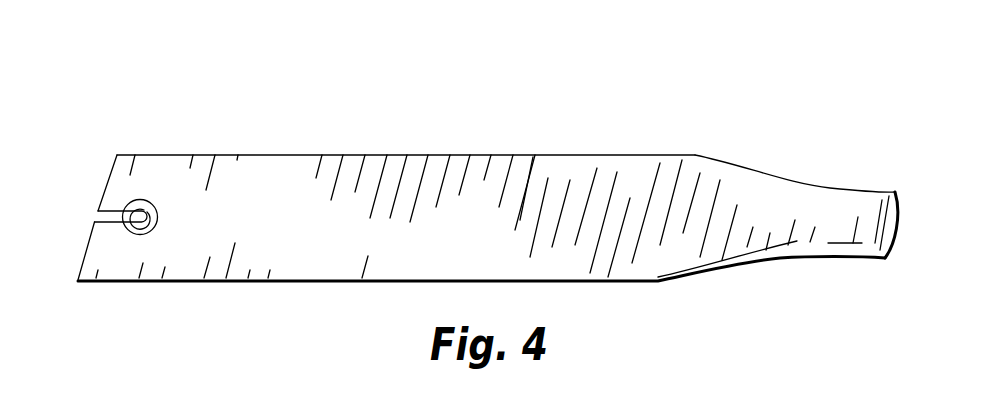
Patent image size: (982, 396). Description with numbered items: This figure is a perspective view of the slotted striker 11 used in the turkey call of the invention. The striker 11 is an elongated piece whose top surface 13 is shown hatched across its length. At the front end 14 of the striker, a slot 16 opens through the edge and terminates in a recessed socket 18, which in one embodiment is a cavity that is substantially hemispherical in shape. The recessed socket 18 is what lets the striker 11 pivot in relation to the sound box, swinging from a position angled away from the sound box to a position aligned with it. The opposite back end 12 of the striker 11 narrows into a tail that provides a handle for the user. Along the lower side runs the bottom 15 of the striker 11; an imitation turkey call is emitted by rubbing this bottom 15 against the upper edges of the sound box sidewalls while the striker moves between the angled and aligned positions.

The slotted striker 11 is at (399, 108).
The back end 12 is at (772, 203).
The top surface 13 is at (560, 190).
The front end 14 is at (133, 172).
The bottom 15 is at (370, 282).
The slot 16 is at (102, 217).
The recessed socket 18 is at (152, 204).